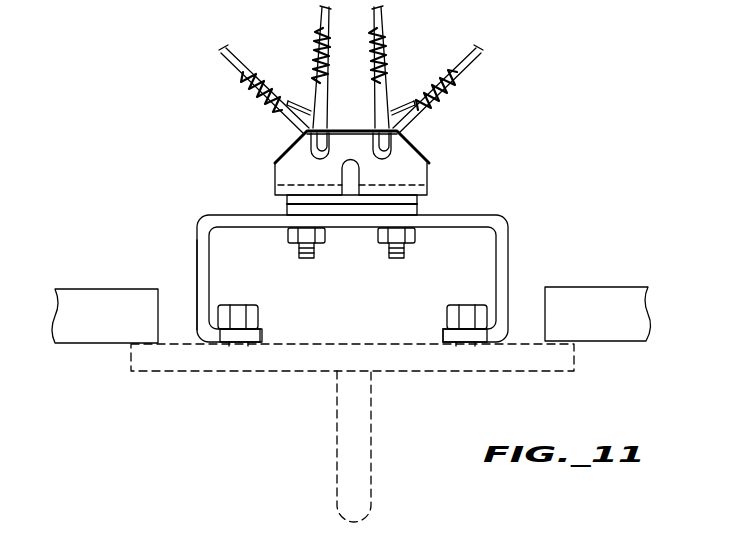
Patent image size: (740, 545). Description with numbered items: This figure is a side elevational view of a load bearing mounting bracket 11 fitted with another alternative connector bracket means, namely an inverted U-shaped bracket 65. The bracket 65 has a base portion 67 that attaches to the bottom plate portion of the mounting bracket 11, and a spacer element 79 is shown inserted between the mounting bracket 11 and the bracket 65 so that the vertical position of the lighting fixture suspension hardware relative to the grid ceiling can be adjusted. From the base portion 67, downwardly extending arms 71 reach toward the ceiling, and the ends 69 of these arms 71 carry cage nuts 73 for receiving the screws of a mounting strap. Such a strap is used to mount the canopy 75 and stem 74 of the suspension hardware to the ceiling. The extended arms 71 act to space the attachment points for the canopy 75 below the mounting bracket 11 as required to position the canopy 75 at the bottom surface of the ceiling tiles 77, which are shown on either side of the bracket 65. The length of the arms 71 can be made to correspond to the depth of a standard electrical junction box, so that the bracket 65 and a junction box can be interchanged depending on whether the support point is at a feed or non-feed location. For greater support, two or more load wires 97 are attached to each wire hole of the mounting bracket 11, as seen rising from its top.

The load wires 97 is at (317, 40).
The mounting bracket 11 is at (405, 163).
The spacer element 79 is at (430, 215).
The base portion 67 is at (260, 215).
The downwardly extending arms 71 is at (198, 263).
The cage nuts 73 is at (237, 305).
The ends 69 is at (262, 335).
The ceiling tiles 77 is at (567, 287).
The canopy 75 is at (270, 373).
The stem 74 is at (372, 438).
The inverted U-shaped bracket 65 is at (573, 207).